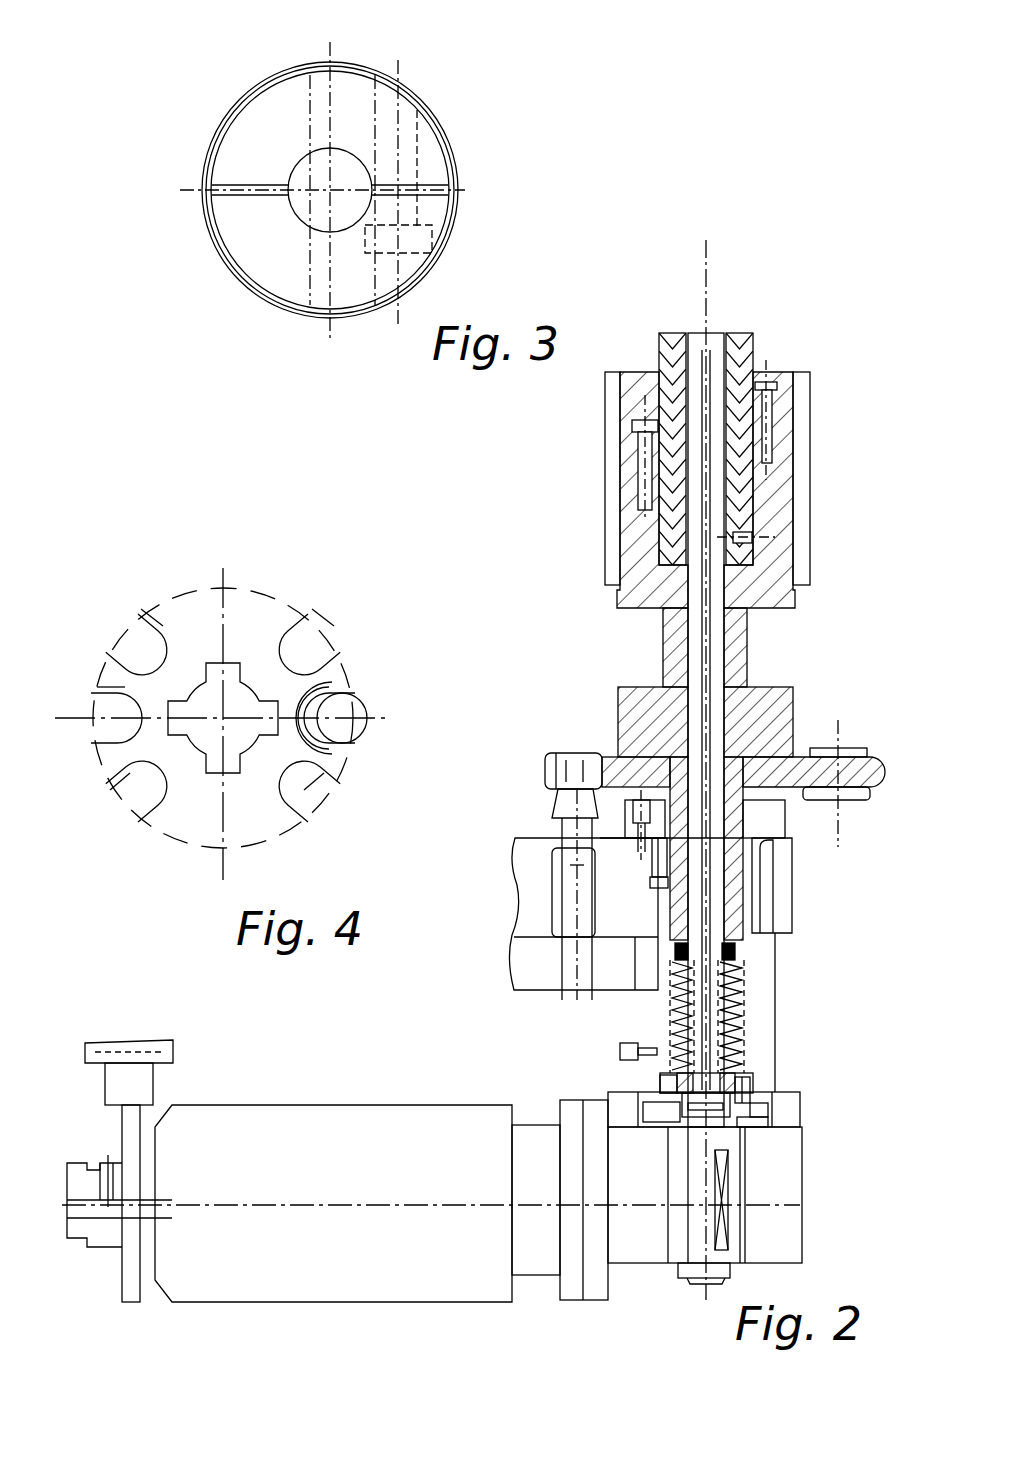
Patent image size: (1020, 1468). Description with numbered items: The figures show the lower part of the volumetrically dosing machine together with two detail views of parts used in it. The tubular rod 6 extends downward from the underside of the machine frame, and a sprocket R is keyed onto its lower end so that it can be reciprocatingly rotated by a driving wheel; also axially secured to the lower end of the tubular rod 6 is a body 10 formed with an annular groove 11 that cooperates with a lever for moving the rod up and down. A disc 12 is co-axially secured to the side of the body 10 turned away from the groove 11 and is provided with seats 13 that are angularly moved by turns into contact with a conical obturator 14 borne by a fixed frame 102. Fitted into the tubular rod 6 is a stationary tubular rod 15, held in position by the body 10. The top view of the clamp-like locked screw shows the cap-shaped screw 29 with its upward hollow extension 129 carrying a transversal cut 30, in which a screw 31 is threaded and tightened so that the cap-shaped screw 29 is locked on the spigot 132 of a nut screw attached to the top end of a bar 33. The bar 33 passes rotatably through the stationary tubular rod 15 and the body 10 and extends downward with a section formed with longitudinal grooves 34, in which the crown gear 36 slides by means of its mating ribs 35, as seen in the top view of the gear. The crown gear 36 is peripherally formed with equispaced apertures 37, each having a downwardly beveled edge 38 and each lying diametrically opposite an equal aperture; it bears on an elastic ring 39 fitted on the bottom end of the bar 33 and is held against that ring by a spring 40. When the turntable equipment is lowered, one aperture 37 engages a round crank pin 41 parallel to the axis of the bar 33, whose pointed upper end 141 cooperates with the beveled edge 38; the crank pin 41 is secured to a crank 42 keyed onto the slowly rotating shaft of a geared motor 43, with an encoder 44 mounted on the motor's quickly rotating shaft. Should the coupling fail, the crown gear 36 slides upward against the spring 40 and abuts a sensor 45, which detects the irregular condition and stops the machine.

In FIG. 2, the tubular rod 6 is at (745, 342).
In FIG. 2, the body 10 is at (793, 710).
In FIG. 2, the annular groove 11 is at (751, 651).
In FIG. 2, the disc 12 is at (880, 773).
In FIG. 2, the seats 13 is at (578, 757).
In FIG. 2, the conical obturator 14 is at (558, 810).
In FIG. 2, the stationary tubular rod 15 is at (682, 333).
In FIG. 3, the cap-shaped screw 29 is at (273, 64).
In FIG. 3, the transversal cut 30 is at (430, 182).
In FIG. 3, the screw 31 is at (417, 128).
In FIG. 2, the bar 33 is at (706, 337).
In FIG. 2, the longitudinal grooves 34 is at (733, 1027).
In FIG. 4, the mating ribs 35 is at (223, 718).
In FIG. 4, the crown gear 36 is at (271, 590).
In FIG. 2, the crown gear 36 is at (652, 1085).
In FIG. 4, the apertures 37 is at (128, 643).
In FIG. 2, the apertures 37 is at (672, 1088).
In FIG. 4, the downwardly beveled edge 38 is at (342, 758).
In FIG. 2, the elastic ring 39 is at (688, 1100).
In FIG. 2, the spring 40 is at (732, 1040).
In FIG. 4, the crank pin 41 is at (342, 717).
In FIG. 2, the crank pin 41 is at (767, 1107).
In FIG. 2, the crank 42 is at (768, 1117).
In FIG. 2, the geared motor 43 is at (348, 1102).
In FIG. 2, the encoder 44 is at (153, 1078).
In FIG. 2, the sensor 45 is at (647, 1040).
In FIG. 2, the fixed frame 102 is at (517, 878).
In FIG. 3, the upward hollow extension 129 is at (350, 88).
In FIG. 3, the spigot 132 is at (312, 198).
In FIG. 2, the pointed upper end 141 is at (750, 1077).
In FIG. 2, the sprocket R is at (814, 421).